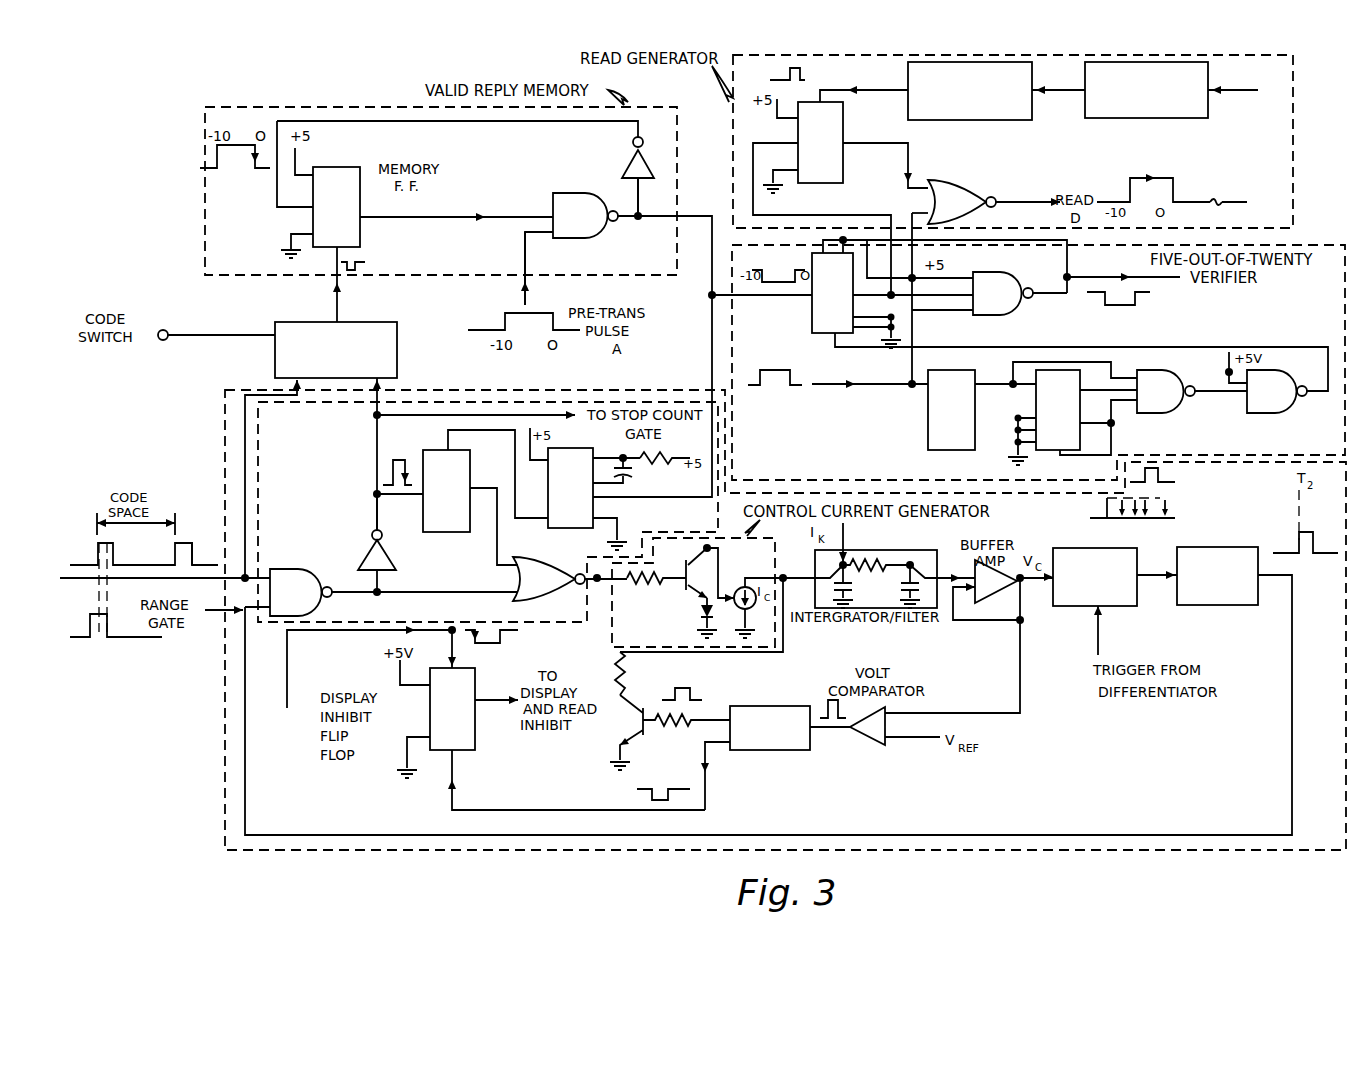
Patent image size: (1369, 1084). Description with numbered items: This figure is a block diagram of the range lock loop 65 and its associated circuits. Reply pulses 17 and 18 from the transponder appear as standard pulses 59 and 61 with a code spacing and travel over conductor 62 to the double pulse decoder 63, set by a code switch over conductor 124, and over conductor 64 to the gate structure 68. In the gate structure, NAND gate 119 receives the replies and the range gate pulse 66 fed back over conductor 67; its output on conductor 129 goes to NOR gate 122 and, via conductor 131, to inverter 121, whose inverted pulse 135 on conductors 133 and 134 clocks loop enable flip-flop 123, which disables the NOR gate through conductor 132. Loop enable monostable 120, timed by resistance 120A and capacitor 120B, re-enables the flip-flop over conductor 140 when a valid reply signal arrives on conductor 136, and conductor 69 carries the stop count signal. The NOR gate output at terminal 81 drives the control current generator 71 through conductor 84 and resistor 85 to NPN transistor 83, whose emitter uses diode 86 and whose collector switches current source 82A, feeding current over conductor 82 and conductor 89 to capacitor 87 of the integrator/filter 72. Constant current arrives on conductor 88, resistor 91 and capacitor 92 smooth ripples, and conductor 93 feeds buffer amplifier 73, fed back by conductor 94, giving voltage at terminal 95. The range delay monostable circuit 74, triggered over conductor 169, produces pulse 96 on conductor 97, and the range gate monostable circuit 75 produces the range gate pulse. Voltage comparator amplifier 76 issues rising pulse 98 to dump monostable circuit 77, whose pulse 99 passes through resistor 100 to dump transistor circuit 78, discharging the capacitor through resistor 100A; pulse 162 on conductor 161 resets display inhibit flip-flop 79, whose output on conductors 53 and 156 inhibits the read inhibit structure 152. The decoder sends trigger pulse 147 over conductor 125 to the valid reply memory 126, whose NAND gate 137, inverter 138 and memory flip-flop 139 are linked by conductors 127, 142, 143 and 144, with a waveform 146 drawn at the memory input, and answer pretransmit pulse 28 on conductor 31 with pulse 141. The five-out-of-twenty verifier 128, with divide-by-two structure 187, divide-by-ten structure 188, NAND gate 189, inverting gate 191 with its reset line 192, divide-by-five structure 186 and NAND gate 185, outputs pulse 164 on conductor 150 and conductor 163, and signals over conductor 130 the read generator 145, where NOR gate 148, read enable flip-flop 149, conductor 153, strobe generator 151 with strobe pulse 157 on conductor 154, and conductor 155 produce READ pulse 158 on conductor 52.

The reply pulse 17 is at (128, 572).
The reply pulse 59 is at (98, 558).
The reply pulse 18 is at (199, 547).
The reply pulse 61 is at (207, 548).
The pretransmit pulse 28 is at (505, 313).
The conductor 31 is at (526, 262).
The conductor 52 is at (1030, 202).
The conductor 53 is at (485, 696).
The conductor 62 is at (83, 590).
The double pulse decoder 63 is at (275, 355).
The conductor 64 is at (264, 575).
The range lock loop 65 is at (452, 852).
The range gate pulse 66 is at (99, 637).
The conductor 67 is at (245, 775).
The gate structure 68 is at (258, 470).
The conductor 69 is at (550, 420).
The control current generator 71 is at (786, 575).
The integrator/filter 72 is at (915, 565).
The buffer amplifier 73 is at (1008, 588).
The range delay monostable circuit 74 is at (1080, 548).
The range gate monostable circuit 75 is at (1205, 547).
The voltage comparator amplifier 76 is at (872, 738).
The dump monostable circuit 77 is at (815, 740).
The dump transistor circuit 78 is at (640, 724).
The display inhibit flip-flop 79 is at (475, 728).
The terminal 81 is at (597, 583).
The conductor 82 is at (750, 584).
The current source 82A is at (758, 608).
The NPN transistor 83 is at (688, 572).
The conductor 84 is at (630, 585).
The resistor 85 is at (705, 602).
The diode 86 is at (704, 617).
The capacitor 87 is at (850, 582).
The conductor 88 is at (847, 530).
The conductor 89 is at (775, 640).
The resistor 91 is at (878, 562).
The capacitor 92 is at (902, 587).
The conductor 93 is at (952, 577).
The conductor 94 is at (1017, 624).
The terminal 95 is at (1022, 584).
The pulse 96 is at (1103, 505).
The conductor 97 is at (1148, 576).
The rising pulse 98 is at (828, 706).
The pulse 99 is at (678, 690).
The resistor 100 is at (680, 730).
The resistor 100A is at (628, 672).
The NAND gate 119 is at (296, 568).
The loop enable monostable 120 is at (548, 500).
The resistance 120A is at (645, 455).
The capacitor 120B is at (633, 476).
The inverter 121 is at (384, 558).
The NOR gate 122 is at (517, 580).
The loop enable flip-flop 123 is at (470, 488).
The conductor 124 is at (185, 335).
The conductor 125 is at (340, 290).
The valid reply memory 126 is at (305, 105).
The conductor 127 is at (636, 218).
The 5 out of 20 verifier 128 is at (1295, 245).
The conductor 129 is at (340, 594).
The conductor 130 is at (818, 215).
The conductor 131 is at (384, 584).
The conductor 132 is at (497, 558).
The conductor 133 is at (375, 512).
The conductor 134 is at (410, 497).
The inverted pulse 135 is at (393, 460).
The conductor 136 is at (697, 500).
The NAND gate 137 is at (585, 190).
The inverter 138 is at (630, 172).
The memory flip-flop 139 is at (340, 167).
The conductor 140 is at (515, 435).
The pulse 141 is at (782, 270).
The conductor 142 is at (637, 195).
The conductor 143 is at (525, 122).
The conductor 144 is at (462, 220).
The read generator 145 is at (733, 160).
The reset pulse 146 is at (205, 152).
The trigger pulse 147 is at (365, 264).
The NOR gate 148 is at (985, 212).
The read enable J-K flip-flop 149 is at (843, 128).
The conductor 150 is at (1068, 272).
The strobe generator 151 is at (975, 120).
The read inhibit structure 152 is at (1170, 118).
The conductor 153 is at (906, 172).
The conductor 154 is at (880, 80).
The conductor 155 is at (1068, 92).
The conductor 156 is at (1240, 82).
The strobe pulse 157 is at (776, 80).
The READ pulse 158 is at (1173, 188).
The conductor 161 is at (515, 810).
The negative-going pulse 162 is at (640, 792).
The conductor 163 is at (1140, 280).
The pulse 164 is at (1113, 305).
The conductor 169 is at (1098, 636).
The NAND gate 185 is at (1022, 305).
The divide-by-five structure 186 is at (825, 333).
The divide-by-two structure 187 is at (958, 450).
The divide-by-ten structure 188 is at (1052, 450).
The NAND gate 189 is at (1185, 410).
The inverting gate 191 is at (1288, 410).
The feedback line 192 is at (1170, 347).